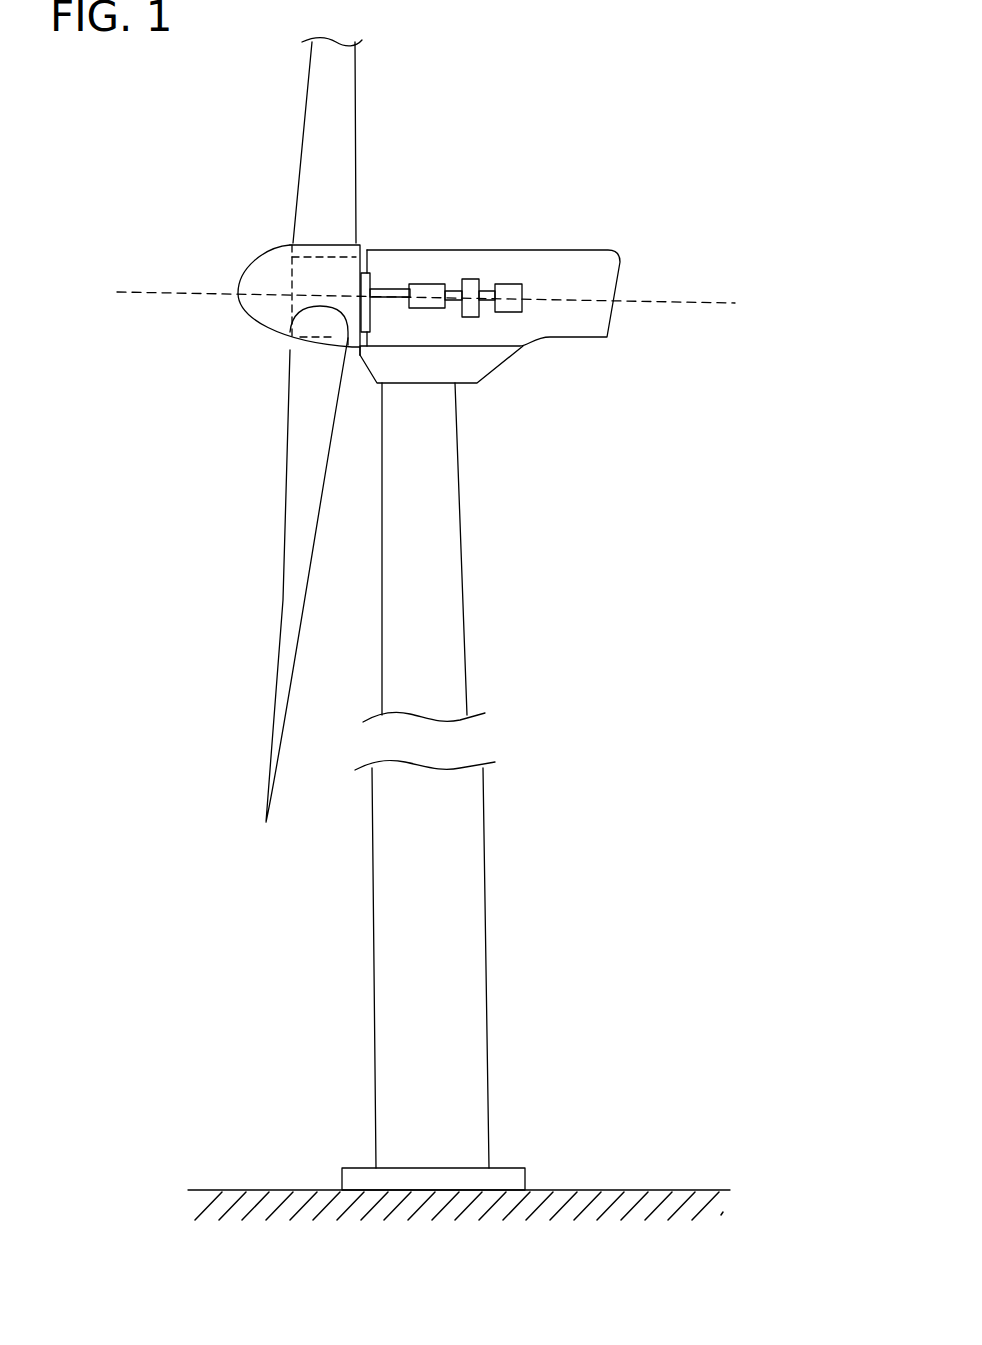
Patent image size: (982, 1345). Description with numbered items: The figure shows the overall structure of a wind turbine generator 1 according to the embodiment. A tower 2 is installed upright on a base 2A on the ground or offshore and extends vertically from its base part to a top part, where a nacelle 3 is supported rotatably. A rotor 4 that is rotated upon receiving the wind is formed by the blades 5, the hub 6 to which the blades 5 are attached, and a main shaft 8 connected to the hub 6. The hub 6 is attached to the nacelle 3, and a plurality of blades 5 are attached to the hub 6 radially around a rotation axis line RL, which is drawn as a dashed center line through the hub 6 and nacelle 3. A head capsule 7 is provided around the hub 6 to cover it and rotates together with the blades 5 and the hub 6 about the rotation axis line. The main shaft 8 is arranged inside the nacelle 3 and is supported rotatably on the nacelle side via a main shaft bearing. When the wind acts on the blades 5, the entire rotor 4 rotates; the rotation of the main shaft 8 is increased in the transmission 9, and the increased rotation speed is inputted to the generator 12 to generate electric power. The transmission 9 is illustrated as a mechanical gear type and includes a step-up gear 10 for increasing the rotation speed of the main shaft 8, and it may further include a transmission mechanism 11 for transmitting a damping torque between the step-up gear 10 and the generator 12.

The wind turbine generator 1 is at (630, 163).
The tower 2 is at (463, 570).
The base 2A is at (517, 1167).
The nacelle 3 is at (620, 288).
The rotor 4 is at (224, 324).
The blade 5 is at (303, 154).
The hub 6 is at (290, 295).
The head capsule 7 is at (245, 272).
The main shaft 8 is at (391, 289).
The transmission 9 is at (457, 265).
The step-up gear 10 is at (428, 284).
The transmission mechanism 11 is at (479, 281).
The generator 12 is at (516, 285).